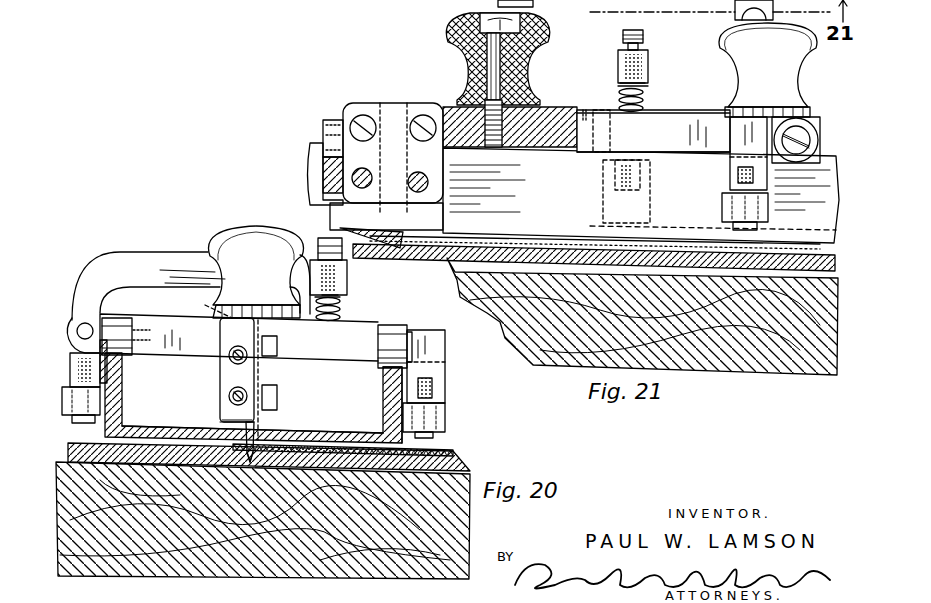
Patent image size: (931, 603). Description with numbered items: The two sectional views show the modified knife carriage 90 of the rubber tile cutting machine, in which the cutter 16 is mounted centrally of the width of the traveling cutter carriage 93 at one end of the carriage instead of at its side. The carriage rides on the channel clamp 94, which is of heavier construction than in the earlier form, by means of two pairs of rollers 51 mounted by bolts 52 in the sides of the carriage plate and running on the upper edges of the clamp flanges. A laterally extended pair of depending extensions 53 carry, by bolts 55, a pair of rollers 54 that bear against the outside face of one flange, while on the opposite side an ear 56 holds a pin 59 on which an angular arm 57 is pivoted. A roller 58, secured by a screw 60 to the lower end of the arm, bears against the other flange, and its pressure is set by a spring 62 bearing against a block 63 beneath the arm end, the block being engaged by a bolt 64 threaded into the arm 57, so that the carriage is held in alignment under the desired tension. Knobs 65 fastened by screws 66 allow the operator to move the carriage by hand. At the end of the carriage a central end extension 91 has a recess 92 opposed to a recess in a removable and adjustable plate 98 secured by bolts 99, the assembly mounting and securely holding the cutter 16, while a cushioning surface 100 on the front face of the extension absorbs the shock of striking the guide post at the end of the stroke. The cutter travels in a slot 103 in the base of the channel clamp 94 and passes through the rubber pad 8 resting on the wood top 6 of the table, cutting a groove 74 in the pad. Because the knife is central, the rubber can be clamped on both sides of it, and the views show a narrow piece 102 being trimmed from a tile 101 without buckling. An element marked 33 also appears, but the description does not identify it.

In FIG. 20, the wood top 6 is at (470, 525).
In FIG. 21, the wood top 6 is at (512, 340).
In FIG. 20, the rubber pad 8 is at (460, 465).
In FIG. 21, the rubber pad 8 is at (395, 252).
In FIG. 20, the cutter 16 is at (245, 416).
In FIG. 21, the cutter 16 is at (395, 103).
In FIG. 21, the machine arm 33 is at (533, 4).
In FIG. 20, the rollers 51 is at (118, 320).
In FIG. 21, the rollers 51 is at (800, 120).
In FIG. 20, the bolts 52 is at (412, 337).
In FIG. 21, the bolts 52 is at (815, 130).
In FIG. 20, the depending extensions 53 is at (440, 365).
In FIG. 21, the depending extensions 53 is at (735, 125).
In FIG. 20, the rollers 54 is at (446, 421).
In FIG. 21, the rollers 54 is at (722, 212).
In FIG. 20, the bolts 55 is at (432, 394).
In FIG. 21, the bolts 55 is at (740, 180).
In FIG. 20, the ear 56 is at (90, 305).
In FIG. 20, the angular arm 57 is at (112, 258).
In FIG. 21, the angular arm 57 is at (648, 65).
In FIG. 20, the roller 58 is at (100, 402).
In FIG. 21, the roller 58 is at (650, 200).
In FIG. 20, the pin 59 is at (82, 322).
In FIG. 20, the screw 60 is at (85, 425).
In FIG. 21, the screw 60 is at (650, 222).
In FIG. 20, the spring 62 is at (340, 313).
In FIG. 21, the spring 62 is at (643, 100).
In FIG. 20, the block 63 is at (341, 300).
In FIG. 21, the block 63 is at (620, 86).
In FIG. 20, the bolt 64 is at (345, 279).
In FIG. 21, the bolt 64 is at (643, 35).
In FIG. 20, the knobs 65 is at (236, 233).
In FIG. 21, the knobs 65 is at (545, 33).
In FIG. 21, the screws 66 is at (487, 52).
In FIG. 20, the groove 74 is at (250, 463).
In FIG. 21, the groove 74 is at (425, 250).
In FIG. 20, the knife carriage 90 is at (239, 292).
In FIG. 21, the knife carriage 90 is at (653, 110).
In FIG. 20, the central end extension 91 is at (226, 345).
In FIG. 21, the central end extension 91 is at (340, 195).
In FIG. 20, the recess 92 is at (203, 305).
In FIG. 20, the cutter carriage 93 is at (165, 335).
In FIG. 21, the cutter carriage 93 is at (583, 110).
In FIG. 20, the channel clamp 94 is at (390, 398).
In FIG. 21, the channel clamp 94 is at (555, 116).
In FIG. 20, the removable and adjustable plate 98 is at (278, 372).
In FIG. 21, the removable and adjustable plate 98 is at (360, 103).
In FIG. 20, the bolts 99 is at (278, 400).
In FIG. 21, the bolts 99 is at (350, 120).
In FIG. 20, the cushioning surface 100 is at (228, 380).
In FIG. 21, the cushioning surface 100 is at (345, 152).
In FIG. 20, the tile 101 is at (455, 448).
In FIG. 21, the tile 101 is at (345, 228).
In FIG. 20, the piece 102 is at (245, 440).
In FIG. 20, the slot 103 is at (303, 427).
In FIG. 21, the slot 103 is at (495, 215).